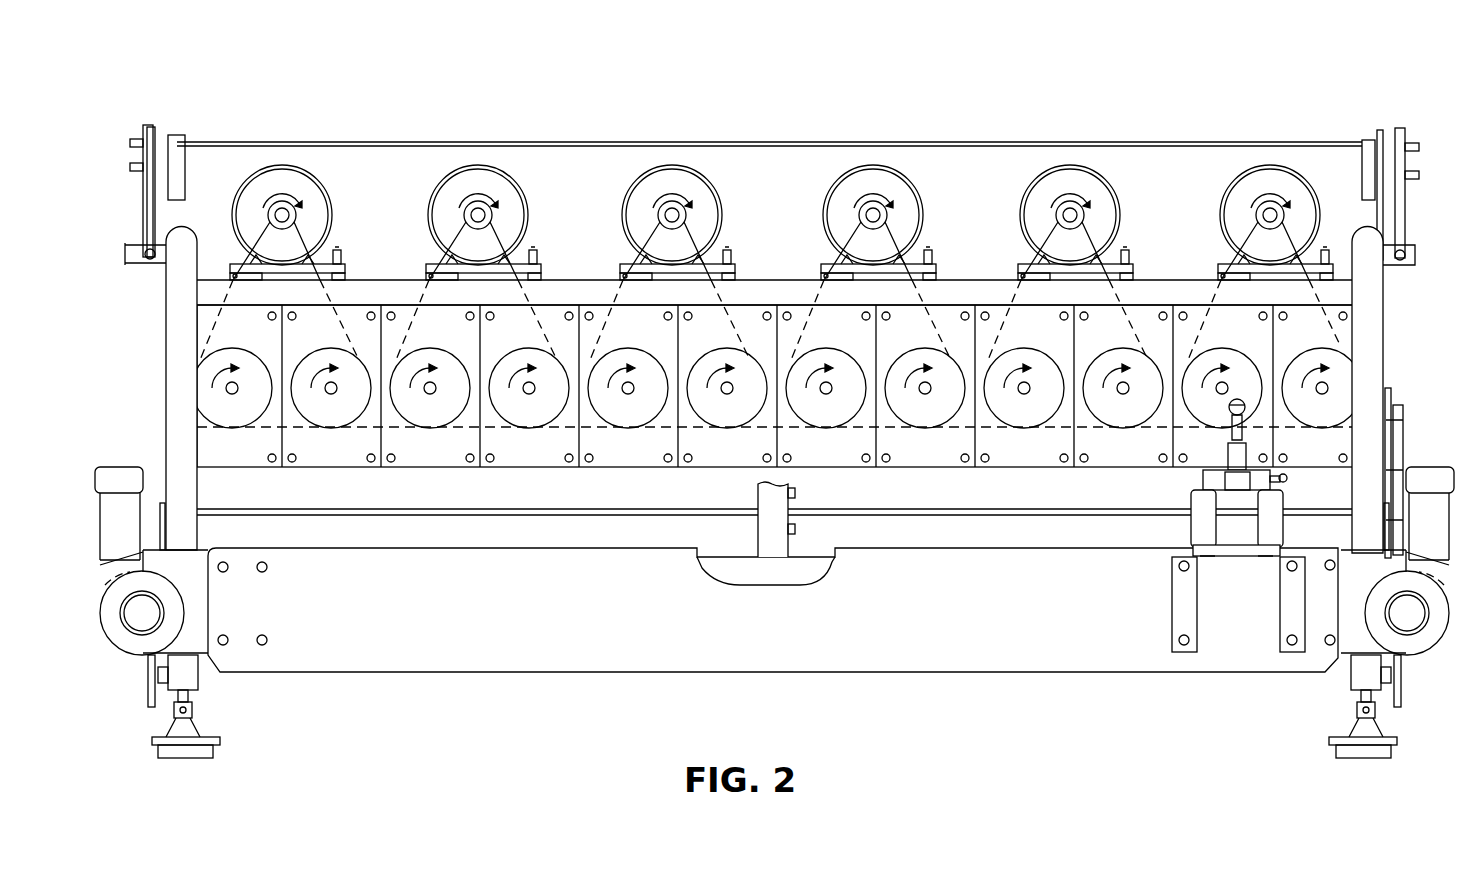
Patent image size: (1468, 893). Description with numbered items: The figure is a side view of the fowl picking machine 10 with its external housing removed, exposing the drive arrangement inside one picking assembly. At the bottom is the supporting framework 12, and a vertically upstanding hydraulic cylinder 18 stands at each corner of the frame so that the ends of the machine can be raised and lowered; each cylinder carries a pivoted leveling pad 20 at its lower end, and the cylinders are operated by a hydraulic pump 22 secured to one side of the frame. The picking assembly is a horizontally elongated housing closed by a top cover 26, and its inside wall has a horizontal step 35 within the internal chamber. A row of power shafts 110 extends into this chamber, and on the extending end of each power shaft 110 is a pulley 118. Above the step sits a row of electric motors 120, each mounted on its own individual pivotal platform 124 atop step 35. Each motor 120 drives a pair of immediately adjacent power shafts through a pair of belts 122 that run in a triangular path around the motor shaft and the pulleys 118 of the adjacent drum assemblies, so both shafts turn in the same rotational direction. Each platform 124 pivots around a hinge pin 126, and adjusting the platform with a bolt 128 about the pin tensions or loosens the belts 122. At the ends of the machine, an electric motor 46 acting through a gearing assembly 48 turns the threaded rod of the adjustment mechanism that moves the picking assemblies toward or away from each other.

The fowl picking machine 10 is at (1172, 106).
The supporting framework 12 is at (459, 680).
The hydraulic cylinder 18 is at (172, 413).
The leveling pad 20 is at (210, 739).
The hydraulic pump 22 is at (1195, 526).
The top cover 26 is at (950, 141).
The horizontal step 35 is at (750, 280).
The electric motor 46 is at (108, 531).
The gearing assembly 48 is at (142, 625).
The power shaft 110 is at (431, 394).
The pulley 118 is at (355, 418).
The electric motor 120 is at (440, 200).
The belt 122 is at (430, 290).
The pivotal platform 124 is at (296, 272).
The hinge pin 126 is at (238, 270).
The bolt 128 is at (338, 250).